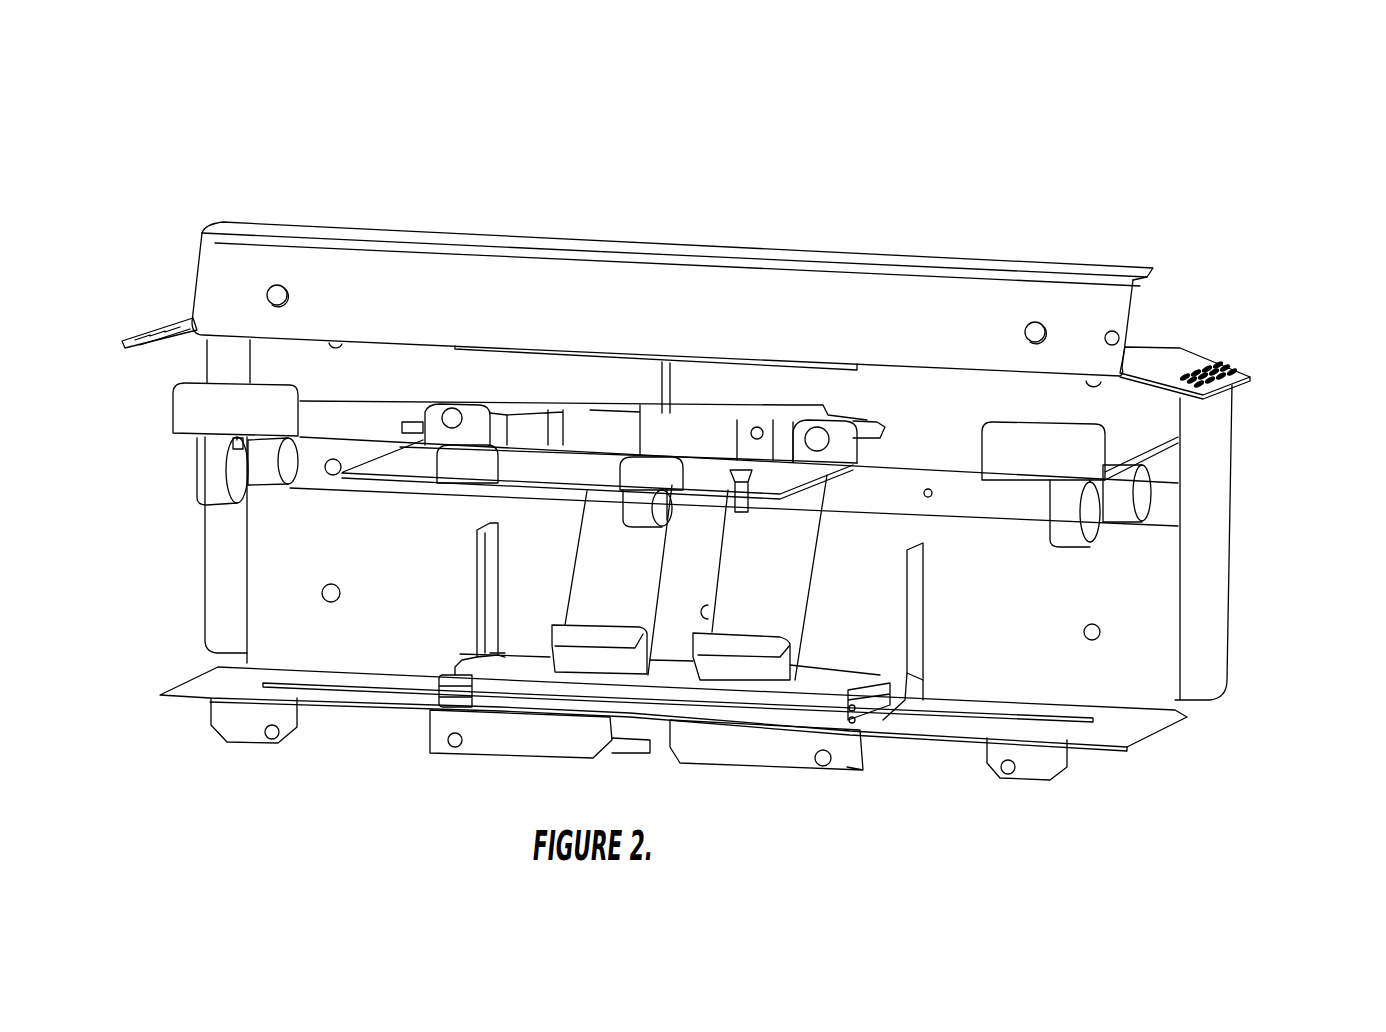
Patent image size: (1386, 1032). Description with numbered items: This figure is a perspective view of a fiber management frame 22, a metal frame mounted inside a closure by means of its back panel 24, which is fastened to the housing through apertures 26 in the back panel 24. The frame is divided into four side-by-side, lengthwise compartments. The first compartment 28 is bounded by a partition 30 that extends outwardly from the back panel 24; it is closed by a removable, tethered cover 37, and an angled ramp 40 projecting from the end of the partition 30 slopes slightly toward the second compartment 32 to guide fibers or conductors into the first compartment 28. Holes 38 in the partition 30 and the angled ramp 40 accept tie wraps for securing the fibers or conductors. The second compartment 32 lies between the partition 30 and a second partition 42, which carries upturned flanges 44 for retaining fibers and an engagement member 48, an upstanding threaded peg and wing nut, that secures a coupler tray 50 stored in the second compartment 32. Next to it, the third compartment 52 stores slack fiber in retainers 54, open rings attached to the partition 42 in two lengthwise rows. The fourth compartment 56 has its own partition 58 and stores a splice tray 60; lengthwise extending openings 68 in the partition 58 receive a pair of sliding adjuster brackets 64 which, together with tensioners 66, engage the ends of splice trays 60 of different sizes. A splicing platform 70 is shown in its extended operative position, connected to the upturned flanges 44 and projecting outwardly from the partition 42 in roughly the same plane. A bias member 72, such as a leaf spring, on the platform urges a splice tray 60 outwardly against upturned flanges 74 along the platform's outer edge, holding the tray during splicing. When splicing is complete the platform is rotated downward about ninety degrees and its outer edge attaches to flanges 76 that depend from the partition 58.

The fiber management frame 22 is at (1277, 361).
The back panel 24 is at (1166, 623).
The apertures 26 is at (1102, 634).
The first compartment 28 is at (1148, 297).
The partition 30 is at (1150, 355).
The second compartment 32 is at (326, 374).
The cover 37 is at (868, 275).
The holes 38 is at (1192, 373).
The angled ramp 40 is at (148, 332).
The partition 42 is at (943, 475).
The upturned flanges 44 is at (1085, 440).
The engagement member 48 is at (675, 374).
The coupler tray 50 is at (866, 420).
The third compartment 52 is at (188, 467).
The retainers 54 is at (212, 482).
The fourth compartment 56 is at (195, 640).
The partition 58 is at (1140, 725).
The splice tray 60 is at (820, 680).
The adjuster brackets 64 is at (920, 607).
The tensioners 66 is at (805, 550).
The lengthwise extending openings 68 is at (950, 708).
The splicing platform 70 is at (390, 477).
The bias member 72 is at (592, 437).
The upturned flanges 74 is at (486, 457).
The flanges 76 is at (752, 750).